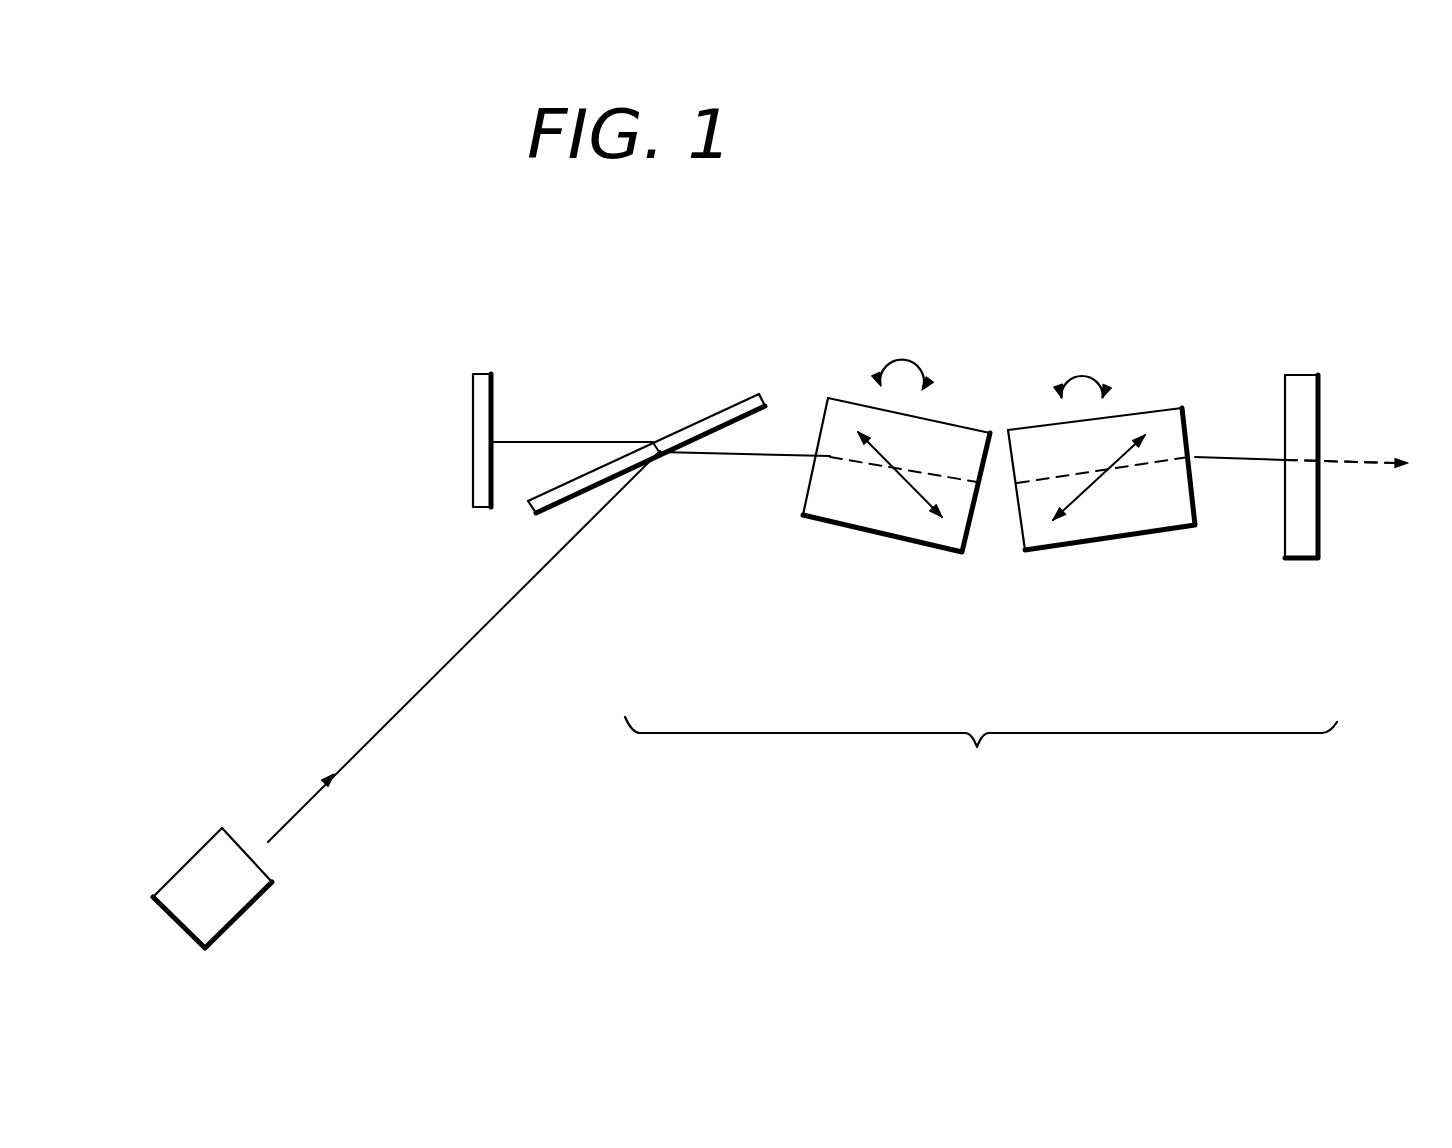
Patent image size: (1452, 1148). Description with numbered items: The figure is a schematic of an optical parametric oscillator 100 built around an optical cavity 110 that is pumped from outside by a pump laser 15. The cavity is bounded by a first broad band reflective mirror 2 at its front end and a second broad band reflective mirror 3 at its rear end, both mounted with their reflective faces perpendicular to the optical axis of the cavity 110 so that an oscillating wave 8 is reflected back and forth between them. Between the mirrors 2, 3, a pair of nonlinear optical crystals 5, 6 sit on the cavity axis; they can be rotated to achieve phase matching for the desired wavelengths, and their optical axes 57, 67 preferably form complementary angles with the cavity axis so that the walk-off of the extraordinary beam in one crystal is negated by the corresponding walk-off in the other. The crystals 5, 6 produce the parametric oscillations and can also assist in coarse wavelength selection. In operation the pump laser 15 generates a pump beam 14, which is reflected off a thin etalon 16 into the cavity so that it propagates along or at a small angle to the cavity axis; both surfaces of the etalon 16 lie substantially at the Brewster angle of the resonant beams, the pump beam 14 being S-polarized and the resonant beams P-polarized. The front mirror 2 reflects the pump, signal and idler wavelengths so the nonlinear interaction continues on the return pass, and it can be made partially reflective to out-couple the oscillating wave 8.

The optical parametric oscillator 100 is at (1011, 300).
The optical cavity 110 is at (981, 755).
The first broad band reflective mirror 2 is at (1313, 375).
The second broad band reflective mirror 3 is at (492, 372).
The nonlinear optical crystal 5 is at (943, 548).
The nonlinear optical crystal 6 is at (1066, 552).
The optical axis 57 is at (912, 492).
The optical axis 67 is at (1097, 483).
The oscillating wave 8 is at (1383, 465).
The pump beam 14 is at (359, 747).
The pump laser 15 is at (199, 850).
The thin etalon 16 is at (731, 408).